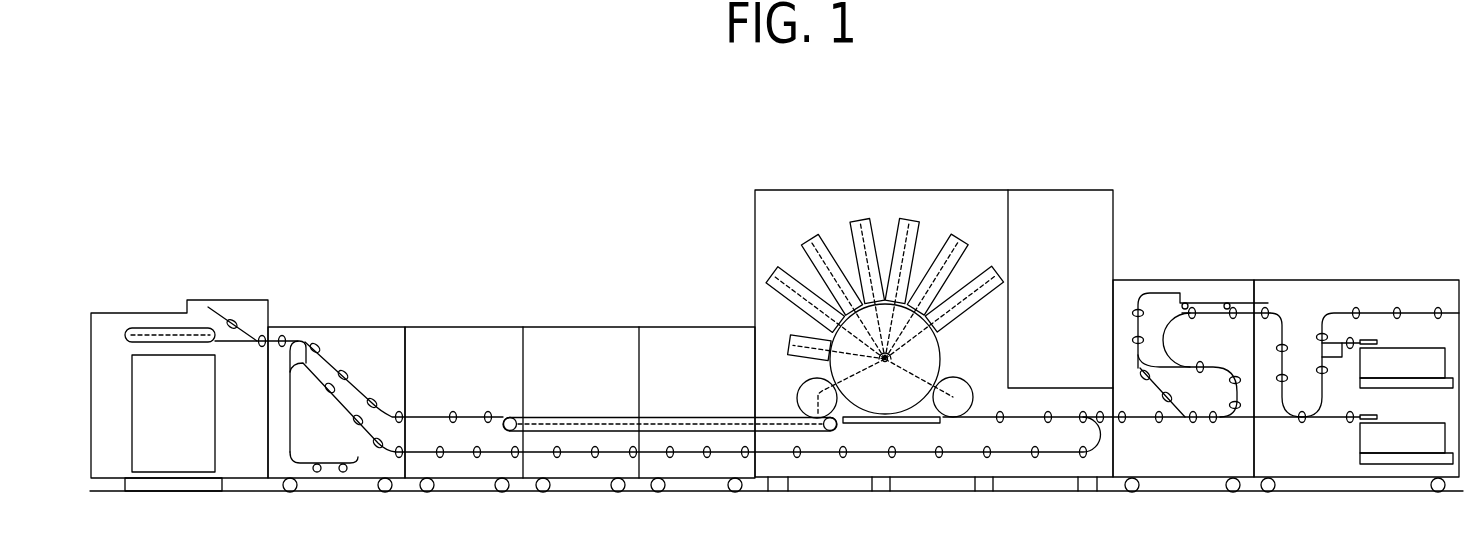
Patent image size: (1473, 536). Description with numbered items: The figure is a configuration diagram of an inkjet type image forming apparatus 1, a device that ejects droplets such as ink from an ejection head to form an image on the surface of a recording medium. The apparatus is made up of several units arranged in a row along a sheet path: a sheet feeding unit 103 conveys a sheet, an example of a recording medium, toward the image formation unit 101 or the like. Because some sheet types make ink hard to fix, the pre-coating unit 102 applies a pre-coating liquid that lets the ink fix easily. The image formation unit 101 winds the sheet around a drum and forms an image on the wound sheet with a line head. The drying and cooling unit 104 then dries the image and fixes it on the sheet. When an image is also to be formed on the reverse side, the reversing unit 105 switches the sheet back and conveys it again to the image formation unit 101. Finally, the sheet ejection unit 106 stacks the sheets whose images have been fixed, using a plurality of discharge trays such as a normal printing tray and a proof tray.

The image forming apparatus 1 is at (699, 95).
The image formation unit 101 is at (933, 190).
The pre-coating unit 102 is at (1183, 280).
The sheet feeding unit 103 is at (1357, 280).
The drying and cooling unit 104 is at (698, 327).
The reversing unit 105 is at (339, 327).
The sheet ejection unit 106 is at (228, 300).